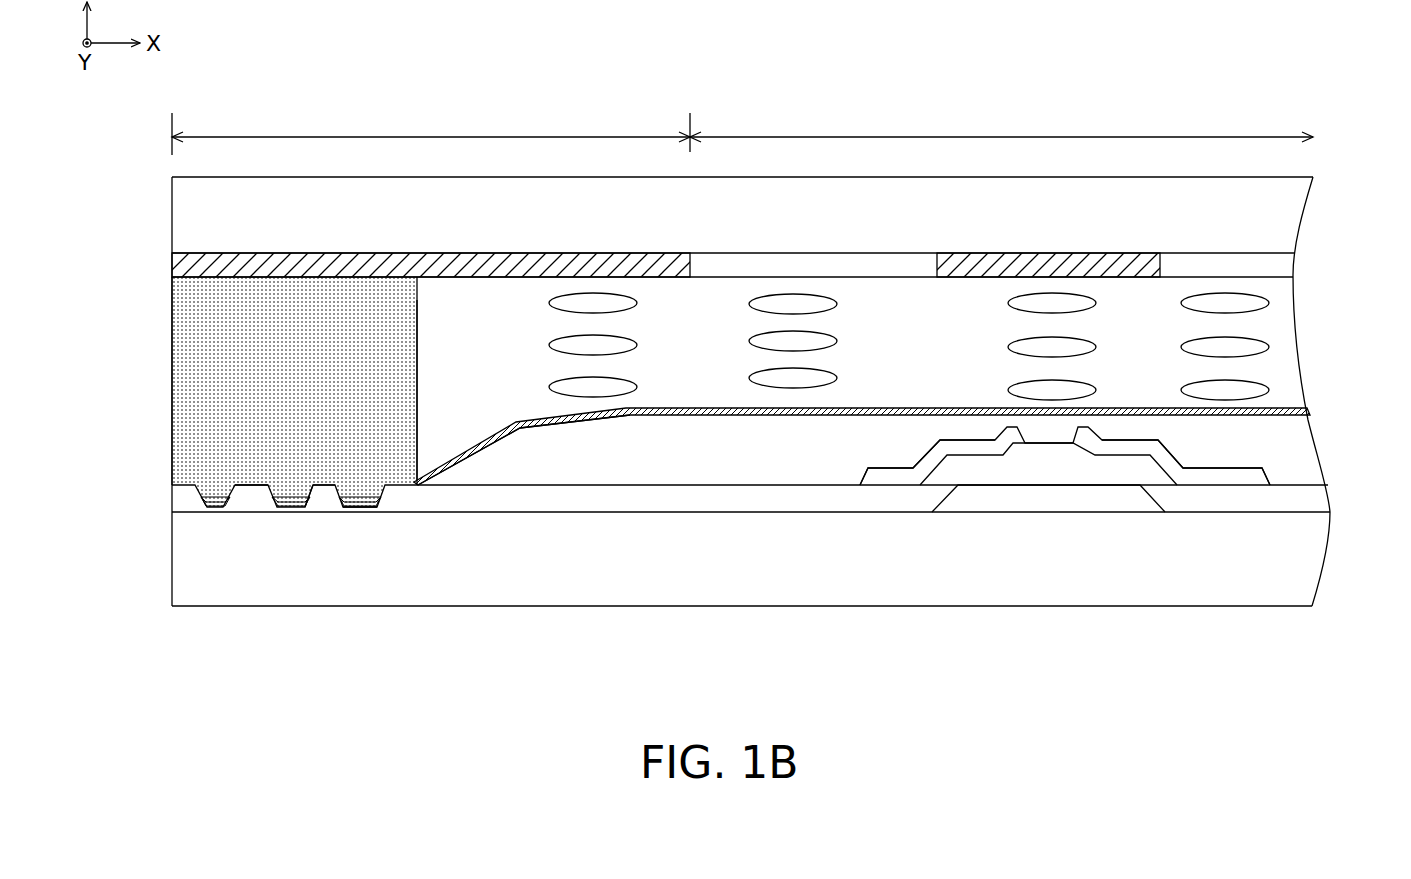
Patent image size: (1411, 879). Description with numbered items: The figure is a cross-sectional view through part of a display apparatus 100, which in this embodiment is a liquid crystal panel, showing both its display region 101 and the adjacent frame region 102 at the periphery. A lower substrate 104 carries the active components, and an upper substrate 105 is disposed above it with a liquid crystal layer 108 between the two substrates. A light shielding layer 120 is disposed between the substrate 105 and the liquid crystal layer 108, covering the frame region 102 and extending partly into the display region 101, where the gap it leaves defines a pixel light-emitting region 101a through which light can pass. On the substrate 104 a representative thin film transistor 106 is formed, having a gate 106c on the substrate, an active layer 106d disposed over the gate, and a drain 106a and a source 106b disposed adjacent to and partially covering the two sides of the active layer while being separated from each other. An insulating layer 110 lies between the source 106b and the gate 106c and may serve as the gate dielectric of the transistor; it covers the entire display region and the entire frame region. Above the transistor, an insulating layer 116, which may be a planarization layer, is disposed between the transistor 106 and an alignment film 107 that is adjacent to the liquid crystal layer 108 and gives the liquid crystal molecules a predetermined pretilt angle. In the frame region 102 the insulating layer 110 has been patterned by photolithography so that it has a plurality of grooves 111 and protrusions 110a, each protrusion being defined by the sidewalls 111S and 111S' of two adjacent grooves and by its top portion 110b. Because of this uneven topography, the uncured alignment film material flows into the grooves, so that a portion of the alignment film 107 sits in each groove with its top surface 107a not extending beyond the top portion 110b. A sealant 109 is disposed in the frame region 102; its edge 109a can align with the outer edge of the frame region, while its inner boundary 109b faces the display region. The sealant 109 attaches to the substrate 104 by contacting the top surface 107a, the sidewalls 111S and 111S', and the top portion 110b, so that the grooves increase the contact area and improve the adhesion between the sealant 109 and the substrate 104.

The display apparatus 100 is at (148, 107).
The display region 101 is at (1001, 122).
The pixel light-emitting region 101a is at (1212, 270).
The frame region 102 is at (431, 128).
The substrate 104 is at (1308, 570).
The substrate 105 is at (1283, 217).
The thin film transistor 106 is at (1065, 571).
The drain 106a is at (905, 478).
The source 106b is at (1198, 478).
The gate 106c is at (980, 500).
The active layer 106d is at (1077, 448).
The alignment film 107 is at (1310, 410).
The top surface of the alignment film 107a is at (359, 498).
The liquid crystal layer 108 is at (1288, 356).
The sealant 109 is at (314, 337).
The edge of the sealant 109a is at (170, 345).
The inner side surface of bank 109b is at (419, 345).
The insulating layer 110 is at (1312, 495).
The protrusion 110a is at (318, 510).
The top portion of the protrusion 110b is at (326, 478).
The groove 111 is at (289, 490).
The sidewall of the groove 111S is at (408, 586).
The sidewall of the groove 111S' is at (236, 575).
The insulating layer 116 is at (1310, 443).
The light shielding layer 120 is at (185, 258).